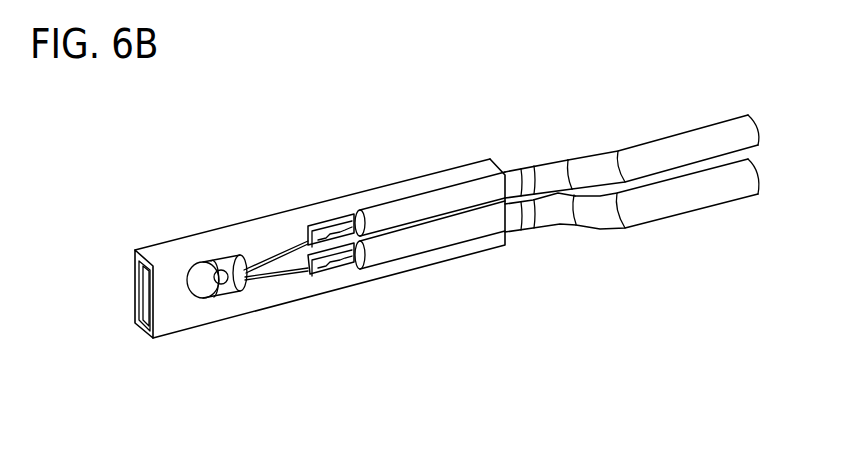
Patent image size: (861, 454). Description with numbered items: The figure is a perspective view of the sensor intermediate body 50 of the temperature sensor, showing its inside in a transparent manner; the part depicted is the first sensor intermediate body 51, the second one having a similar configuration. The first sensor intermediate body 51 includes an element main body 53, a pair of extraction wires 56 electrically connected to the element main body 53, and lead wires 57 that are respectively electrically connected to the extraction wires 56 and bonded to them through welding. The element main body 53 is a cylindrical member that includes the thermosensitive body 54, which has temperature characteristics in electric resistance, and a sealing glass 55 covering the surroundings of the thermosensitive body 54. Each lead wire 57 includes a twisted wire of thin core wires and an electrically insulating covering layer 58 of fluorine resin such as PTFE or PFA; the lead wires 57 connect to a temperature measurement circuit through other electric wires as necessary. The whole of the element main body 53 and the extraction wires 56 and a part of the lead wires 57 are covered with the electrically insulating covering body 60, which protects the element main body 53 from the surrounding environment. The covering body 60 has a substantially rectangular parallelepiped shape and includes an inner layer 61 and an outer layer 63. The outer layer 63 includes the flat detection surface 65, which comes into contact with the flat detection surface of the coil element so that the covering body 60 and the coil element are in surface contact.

The sensor intermediate body 50 is at (557, 186).
The first sensor intermediate body 51 is at (415, 167).
The element main body 53 is at (192, 212).
The thermosensitive body 54 is at (216, 266).
The sealing glass 55 is at (220, 264).
The extraction wire 56 is at (288, 252).
The lead wire 57 is at (550, 160).
The covering layer 58 is at (671, 134).
The covering body 60 is at (206, 335).
The inner layer 61 is at (143, 328).
The outer layer 63 is at (147, 340).
The detection surface 65 is at (342, 196).